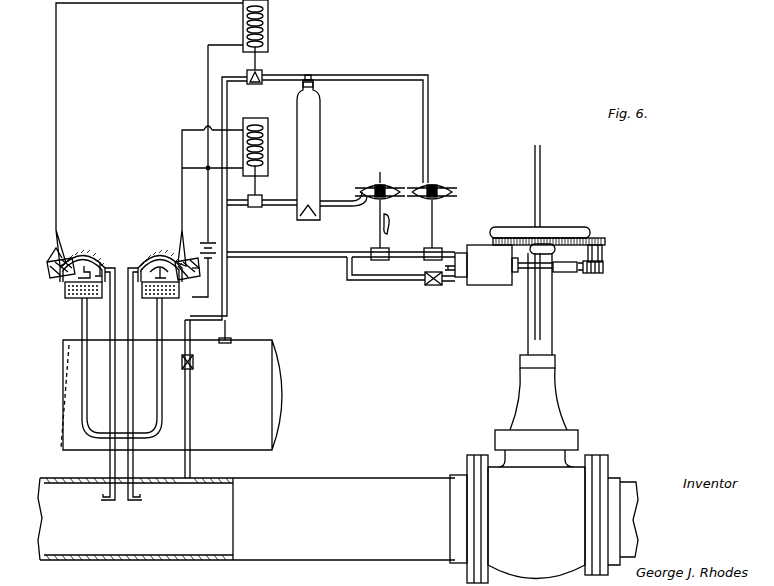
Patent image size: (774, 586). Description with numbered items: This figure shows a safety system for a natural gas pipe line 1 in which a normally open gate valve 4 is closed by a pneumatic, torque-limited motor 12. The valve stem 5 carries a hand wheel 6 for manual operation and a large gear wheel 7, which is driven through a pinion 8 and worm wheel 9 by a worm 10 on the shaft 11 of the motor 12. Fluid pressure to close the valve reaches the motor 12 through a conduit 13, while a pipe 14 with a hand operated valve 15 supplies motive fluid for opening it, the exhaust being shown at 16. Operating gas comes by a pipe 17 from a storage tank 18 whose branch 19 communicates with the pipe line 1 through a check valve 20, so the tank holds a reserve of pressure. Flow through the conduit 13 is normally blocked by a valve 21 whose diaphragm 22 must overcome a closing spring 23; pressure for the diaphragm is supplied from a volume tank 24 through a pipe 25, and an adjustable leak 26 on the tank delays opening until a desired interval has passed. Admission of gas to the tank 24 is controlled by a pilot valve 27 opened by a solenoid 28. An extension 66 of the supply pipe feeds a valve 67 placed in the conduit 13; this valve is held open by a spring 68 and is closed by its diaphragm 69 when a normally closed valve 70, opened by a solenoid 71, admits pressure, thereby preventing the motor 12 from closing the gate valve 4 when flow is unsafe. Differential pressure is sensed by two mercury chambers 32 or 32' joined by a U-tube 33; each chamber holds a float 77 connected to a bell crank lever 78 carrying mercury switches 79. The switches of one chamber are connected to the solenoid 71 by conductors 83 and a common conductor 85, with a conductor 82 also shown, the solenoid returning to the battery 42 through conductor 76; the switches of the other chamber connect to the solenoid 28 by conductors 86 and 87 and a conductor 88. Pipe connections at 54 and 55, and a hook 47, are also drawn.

The pipe line 1 is at (282, 560).
The gate valve 4 is at (578, 442).
The valve stem 5 is at (541, 176).
The hand wheel 6 is at (585, 229).
The gear wheel 7 is at (548, 237).
The pinion 8 is at (605, 242).
The worm wheel 9 is at (590, 273).
The worm 10 is at (605, 267).
The motor shaft 11 is at (556, 273).
The motor 12 is at (502, 280).
The conduit 13 is at (457, 252).
The pipe 14 is at (398, 281).
The hand operated valve 15 is at (432, 287).
The exhaust 16 is at (460, 283).
The pipe 17 is at (228, 298).
The storage tank 18 is at (276, 432).
The branch pipe 19 is at (191, 429).
The check valve 20 is at (194, 361).
The normally closed valve 21 is at (370, 252).
The diaphragm 22 is at (394, 188).
The valve closing spring 23 is at (376, 170).
The volume tank 24 is at (320, 127).
The pipe 25 is at (341, 198).
The adjustable leak 26 is at (316, 89).
The pilot valve 27 is at (255, 207).
The solenoid 28 is at (258, 168).
The mercury containing chamber 32 is at (77, 364).
The mercury chamber 32' is at (161, 364).
The U-tube 33 is at (82, 330).
The battery 42 is at (200, 265).
The hook 47 is at (389, 226).
The pipe elbow 54 is at (106, 499).
The pipe elbow 55 is at (144, 498).
The extension pipe 66 is at (336, 78).
The valve 67 is at (430, 251).
The spring 68 is at (452, 196).
The diaphragm 69 is at (444, 186).
The normally closed valve 70 is at (262, 72).
The solenoid 71 is at (268, 12).
The conductor 76 is at (208, 92).
The float 77 is at (103, 260).
The bell crank lever 78 is at (84, 264).
The mercury switches 79 is at (48, 263).
The common conductor 82 is at (50, 247).
The conductor 83 is at (62, 236).
The common conductor 85 is at (57, 100).
The conductor 86 is at (176, 246).
The conductor 87 is at (184, 252).
The conductor 88 is at (182, 168).